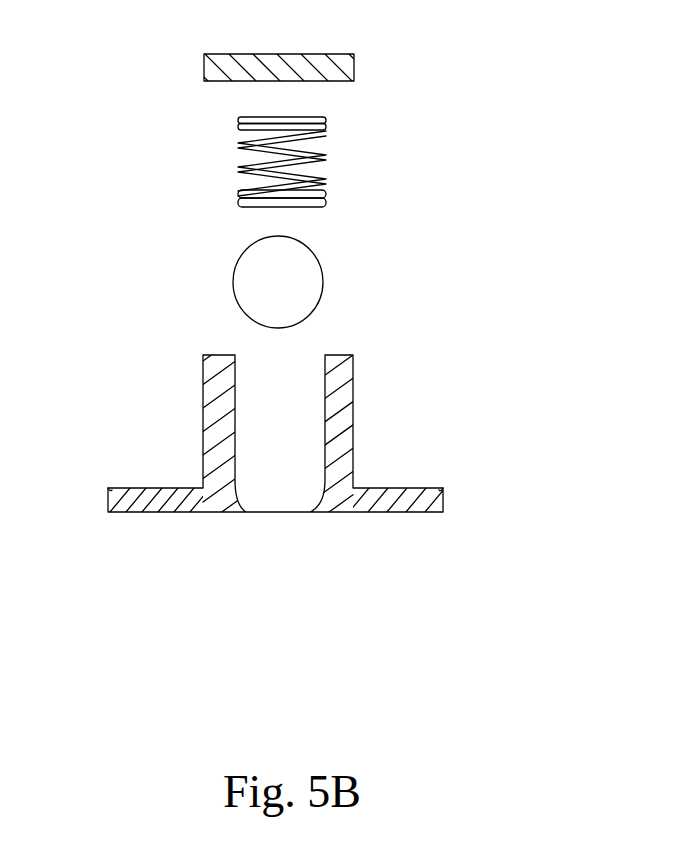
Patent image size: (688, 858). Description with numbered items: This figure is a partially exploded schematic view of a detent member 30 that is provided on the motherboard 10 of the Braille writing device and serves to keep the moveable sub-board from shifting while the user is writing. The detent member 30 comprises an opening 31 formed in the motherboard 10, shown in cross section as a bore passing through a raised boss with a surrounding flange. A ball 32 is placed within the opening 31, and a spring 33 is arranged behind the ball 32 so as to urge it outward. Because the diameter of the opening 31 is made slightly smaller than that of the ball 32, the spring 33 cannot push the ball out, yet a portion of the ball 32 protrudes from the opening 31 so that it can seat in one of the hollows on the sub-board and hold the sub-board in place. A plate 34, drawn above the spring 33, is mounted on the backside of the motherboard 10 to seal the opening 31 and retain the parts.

The motherboard 10 is at (264, 326).
The detent member 30 is at (274, 312).
The opening 31 is at (278, 502).
The ball 32 is at (317, 295).
The spring 33 is at (318, 165).
The plate 34 is at (348, 67).